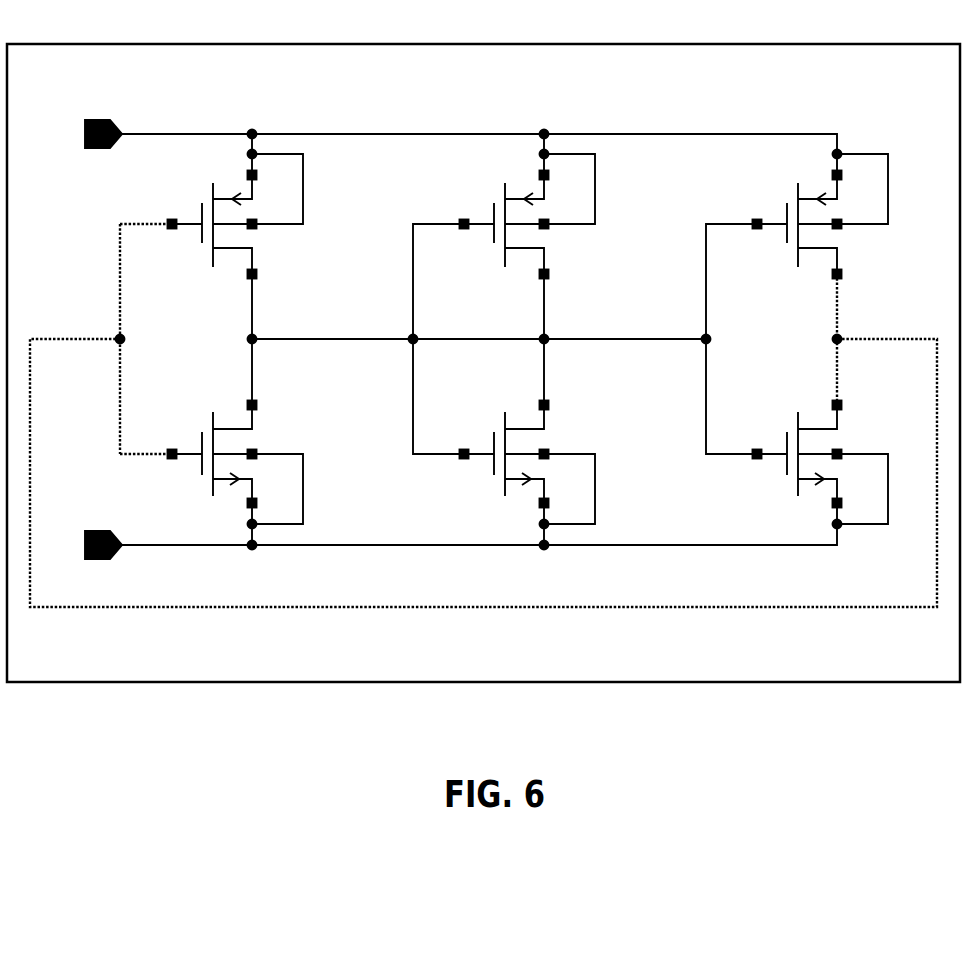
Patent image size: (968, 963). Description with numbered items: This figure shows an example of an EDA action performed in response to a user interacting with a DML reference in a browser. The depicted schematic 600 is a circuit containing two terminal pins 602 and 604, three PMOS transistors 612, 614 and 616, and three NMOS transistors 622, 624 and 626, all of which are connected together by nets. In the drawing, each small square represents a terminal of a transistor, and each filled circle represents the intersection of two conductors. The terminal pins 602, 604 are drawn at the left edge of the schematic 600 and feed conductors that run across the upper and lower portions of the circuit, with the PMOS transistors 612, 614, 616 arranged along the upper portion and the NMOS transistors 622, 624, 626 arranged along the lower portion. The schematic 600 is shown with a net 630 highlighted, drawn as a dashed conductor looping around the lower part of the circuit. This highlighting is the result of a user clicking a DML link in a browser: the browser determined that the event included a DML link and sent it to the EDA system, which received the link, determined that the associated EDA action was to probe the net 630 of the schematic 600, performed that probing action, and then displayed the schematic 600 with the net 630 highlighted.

The schematic 600 is at (74, 26).
The terminal pin 602 is at (120, 112).
The terminal pin 604 is at (120, 524).
The PMOS transistor 612 is at (200, 181).
The PMOS transistor 614 is at (492, 181).
The PMOS transistor 616 is at (785, 181).
The NMOS transistor 622 is at (200, 408).
The NMOS transistor 624 is at (492, 408).
The NMOS transistor 626 is at (785, 408).
The net 630 is at (471, 616).